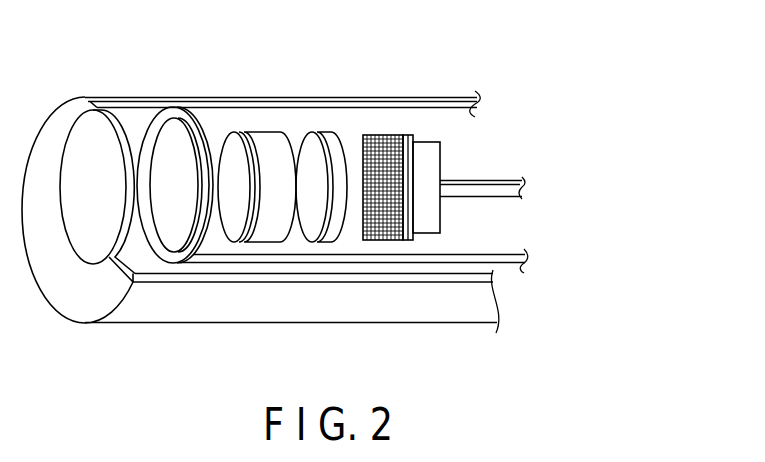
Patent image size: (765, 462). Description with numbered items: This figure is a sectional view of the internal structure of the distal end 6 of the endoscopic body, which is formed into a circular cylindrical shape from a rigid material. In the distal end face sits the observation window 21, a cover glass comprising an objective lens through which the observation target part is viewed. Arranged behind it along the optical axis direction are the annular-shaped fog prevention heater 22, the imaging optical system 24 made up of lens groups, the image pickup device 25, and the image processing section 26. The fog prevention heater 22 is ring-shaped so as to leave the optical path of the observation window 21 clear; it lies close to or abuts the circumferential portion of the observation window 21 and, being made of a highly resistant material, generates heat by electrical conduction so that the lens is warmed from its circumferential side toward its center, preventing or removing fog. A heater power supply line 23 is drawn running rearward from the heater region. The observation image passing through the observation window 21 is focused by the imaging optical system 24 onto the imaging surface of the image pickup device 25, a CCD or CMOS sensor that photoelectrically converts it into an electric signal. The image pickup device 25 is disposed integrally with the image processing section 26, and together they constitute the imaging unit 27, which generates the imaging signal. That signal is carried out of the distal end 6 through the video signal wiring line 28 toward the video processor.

The distal end 6 is at (361, 97).
The observation window 21 is at (117, 108).
The fog prevention heater 22 is at (193, 115).
The heater power cable 23 is at (516, 266).
The imaging optical system 24 is at (270, 131).
The image pickup device 25 is at (405, 134).
The image processing section 26 is at (427, 142).
The imaging unit 27 is at (416, 128).
The video signal wiring line 28 is at (510, 180).